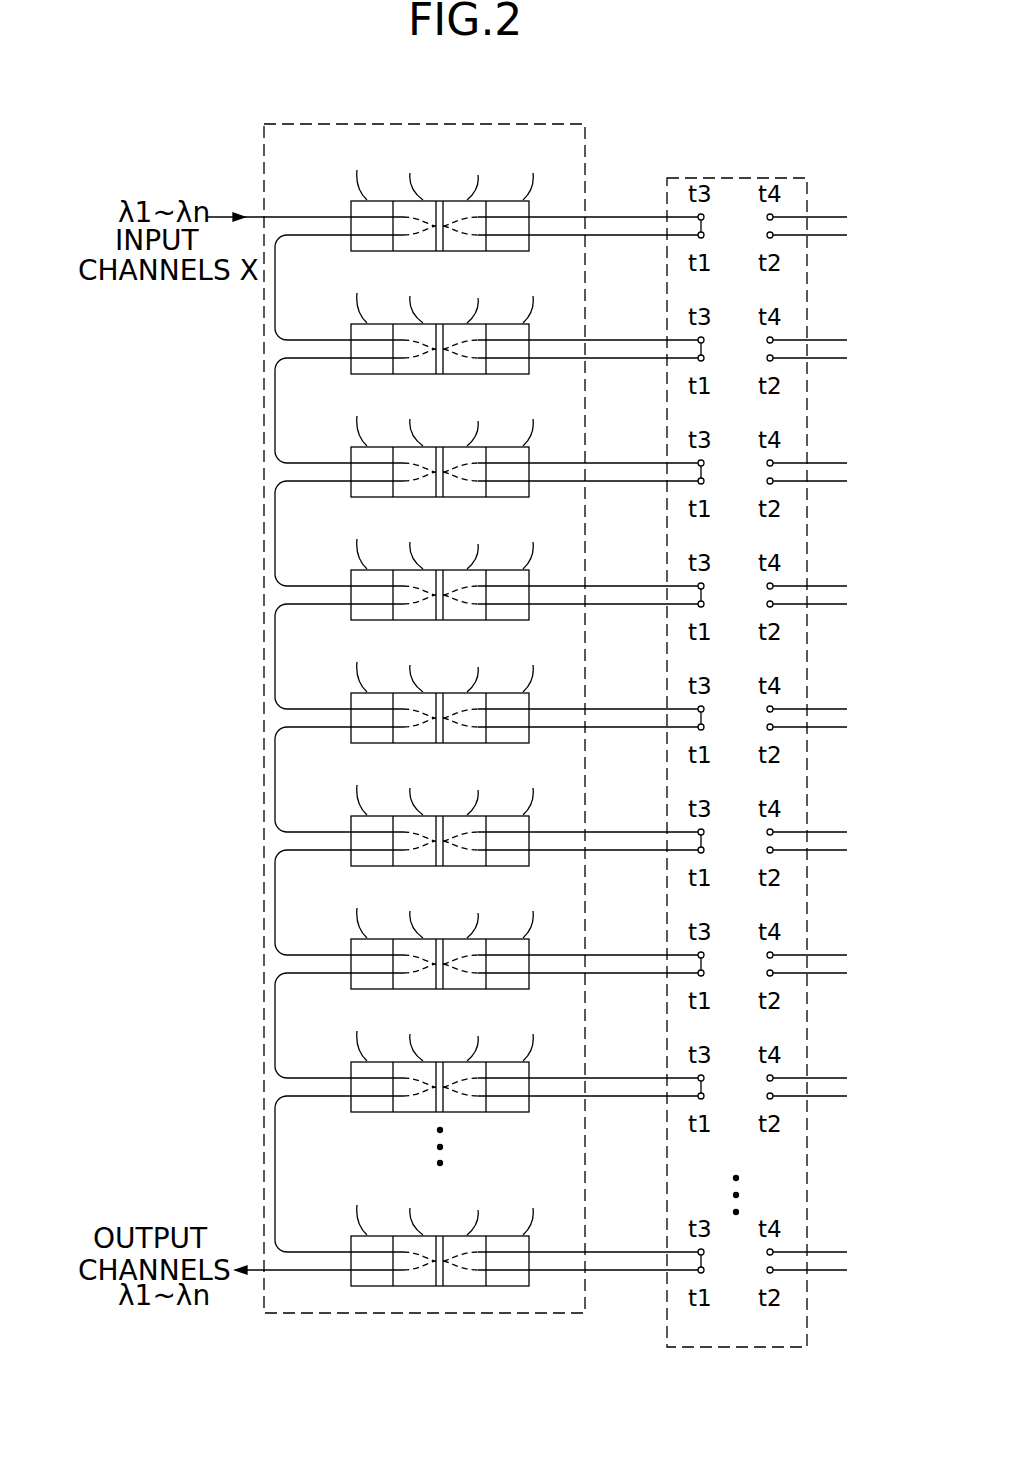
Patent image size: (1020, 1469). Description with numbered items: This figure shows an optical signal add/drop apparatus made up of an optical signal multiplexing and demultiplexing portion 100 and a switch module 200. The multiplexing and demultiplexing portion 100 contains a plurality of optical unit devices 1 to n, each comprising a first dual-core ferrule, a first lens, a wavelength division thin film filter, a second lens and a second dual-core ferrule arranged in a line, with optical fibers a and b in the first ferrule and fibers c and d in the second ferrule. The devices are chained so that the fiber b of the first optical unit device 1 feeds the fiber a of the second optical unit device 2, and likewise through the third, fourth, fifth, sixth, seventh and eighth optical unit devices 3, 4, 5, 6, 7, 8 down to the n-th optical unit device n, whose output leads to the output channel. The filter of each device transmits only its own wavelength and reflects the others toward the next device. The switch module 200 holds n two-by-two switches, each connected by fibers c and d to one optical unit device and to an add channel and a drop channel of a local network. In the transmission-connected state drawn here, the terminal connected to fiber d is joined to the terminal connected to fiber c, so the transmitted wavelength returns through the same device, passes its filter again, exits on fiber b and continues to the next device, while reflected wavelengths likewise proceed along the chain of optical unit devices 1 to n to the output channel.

The optical signal multiplexing and demultiplexing portion 100 is at (264, 143).
The switch module 200 is at (733, 177).
The first optical unit device 1 is at (497, 193).
The second optical unit device 2 is at (497, 316).
The third optical unit device 3 is at (497, 439).
The fourth optical unit device 4 is at (497, 562).
The fifth optical unit device 5 is at (497, 685).
The sixth optical unit device 6 is at (497, 808).
The seventh optical unit device 7 is at (497, 931).
The eighth optical unit device 8 is at (497, 1054).
The n-th optical unit device n is at (496, 1229).